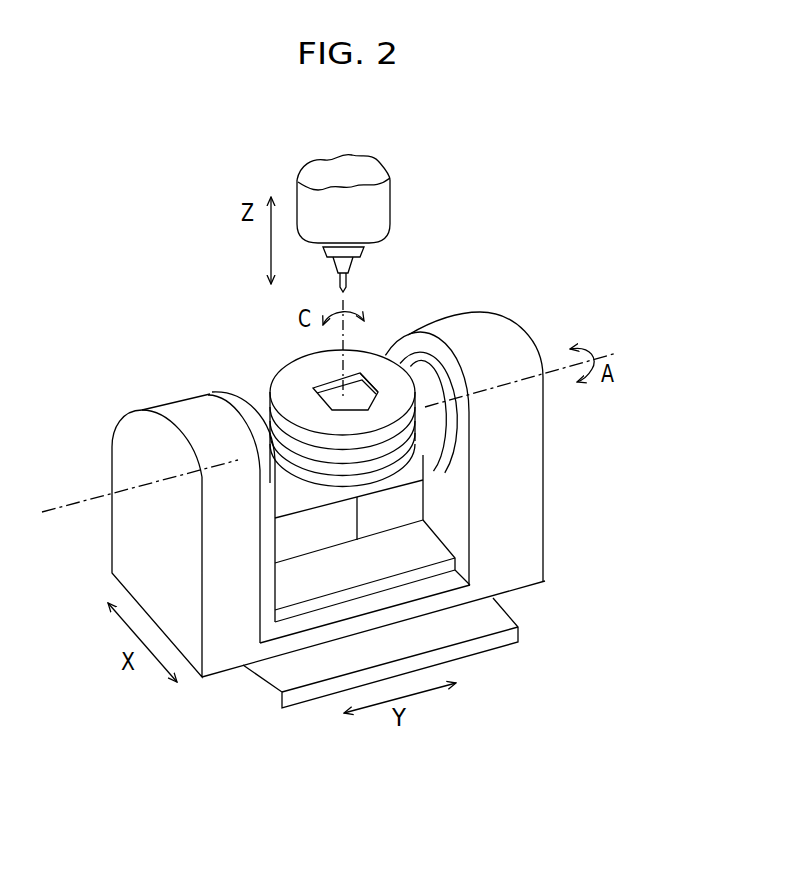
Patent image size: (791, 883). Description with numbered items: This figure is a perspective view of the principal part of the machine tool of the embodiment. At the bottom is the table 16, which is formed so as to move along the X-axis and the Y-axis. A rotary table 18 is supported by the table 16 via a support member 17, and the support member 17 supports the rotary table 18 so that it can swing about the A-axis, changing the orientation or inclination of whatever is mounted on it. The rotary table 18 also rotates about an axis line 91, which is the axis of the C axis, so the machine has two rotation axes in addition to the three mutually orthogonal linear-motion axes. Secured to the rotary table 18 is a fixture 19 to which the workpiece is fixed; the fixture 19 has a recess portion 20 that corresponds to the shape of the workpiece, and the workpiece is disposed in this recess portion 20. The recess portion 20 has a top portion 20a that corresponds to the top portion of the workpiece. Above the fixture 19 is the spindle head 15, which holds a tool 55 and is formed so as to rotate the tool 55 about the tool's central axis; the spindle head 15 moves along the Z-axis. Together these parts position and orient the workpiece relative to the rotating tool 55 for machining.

The spindle head 15 is at (367, 210).
The tool 55 is at (352, 278).
The axis line 91 is at (350, 343).
The fixture 19 is at (397, 387).
The rotary table 18 is at (407, 433).
The recess portion 20 is at (325, 385).
The top portion 20a is at (407, 405).
The support member 17 is at (521, 529).
The table 16 is at (279, 673).